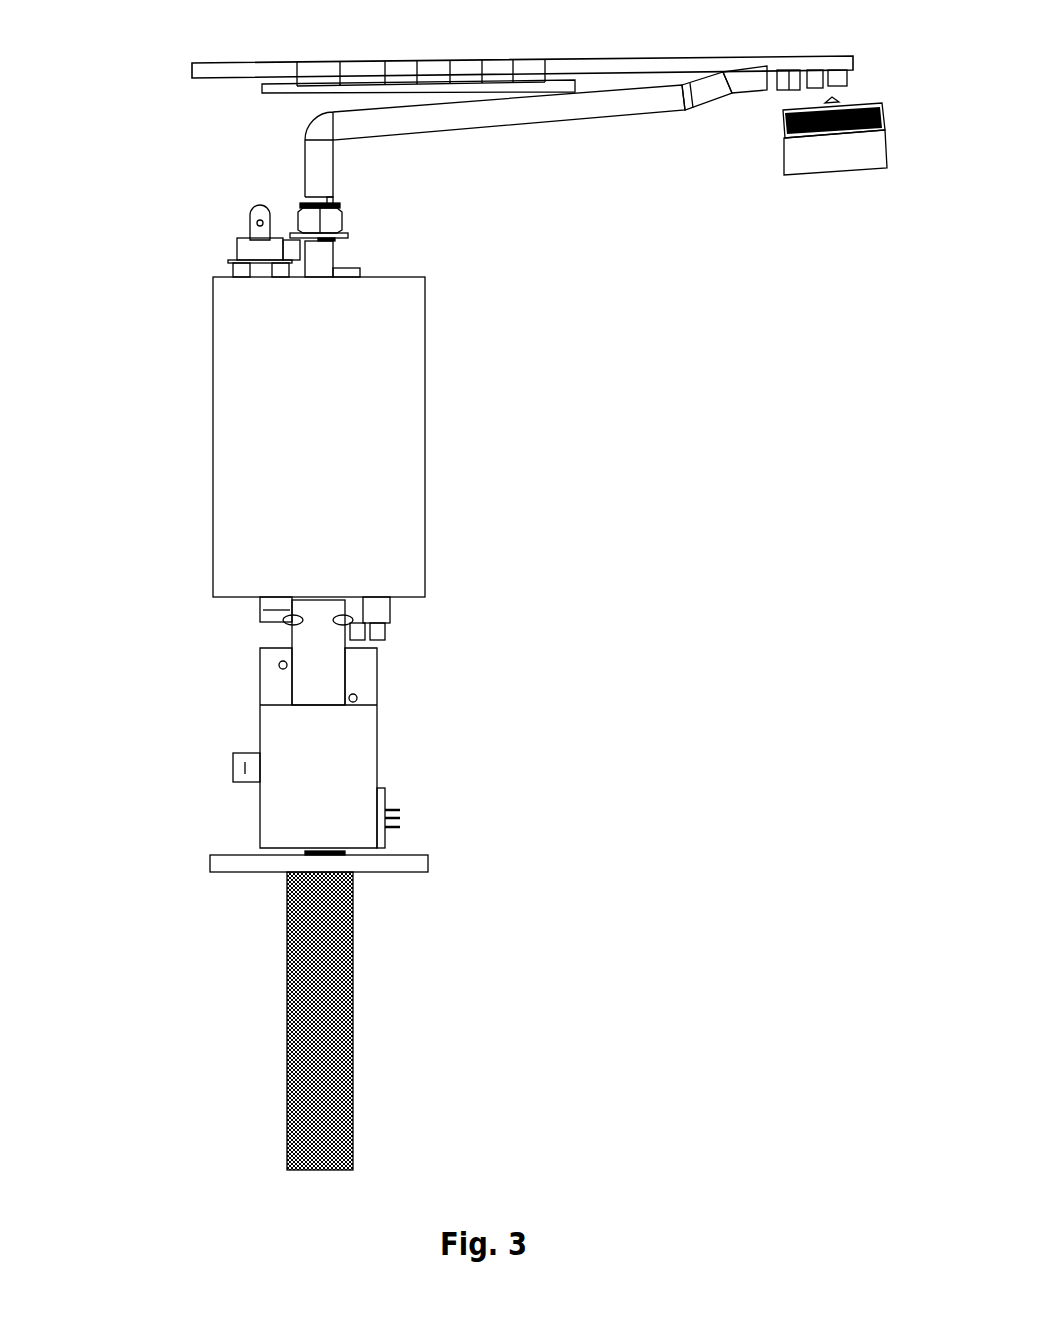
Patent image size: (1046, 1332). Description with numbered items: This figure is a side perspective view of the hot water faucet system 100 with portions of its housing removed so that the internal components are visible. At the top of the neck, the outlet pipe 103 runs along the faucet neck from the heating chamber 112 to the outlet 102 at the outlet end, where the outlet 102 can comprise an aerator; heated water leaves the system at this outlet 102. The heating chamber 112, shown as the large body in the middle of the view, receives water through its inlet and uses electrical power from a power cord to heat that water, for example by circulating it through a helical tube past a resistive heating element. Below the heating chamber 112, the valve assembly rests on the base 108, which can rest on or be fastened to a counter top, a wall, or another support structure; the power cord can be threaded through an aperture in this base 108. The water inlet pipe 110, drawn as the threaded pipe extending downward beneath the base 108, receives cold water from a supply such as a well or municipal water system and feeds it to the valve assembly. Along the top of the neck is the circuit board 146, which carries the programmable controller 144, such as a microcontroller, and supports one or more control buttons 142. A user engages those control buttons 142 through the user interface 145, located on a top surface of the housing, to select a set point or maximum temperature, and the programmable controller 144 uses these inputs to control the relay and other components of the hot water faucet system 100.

The hot water faucet system 100 is at (138, 38).
The outlet 102 is at (887, 137).
The outlet pipe 103 is at (565, 120).
The base 108 is at (428, 862).
The water inlet pipe 110 is at (353, 1043).
The heating chamber 112 is at (213, 442).
The control buttons 142 is at (533, 62).
The programmable controller 144 is at (315, 65).
The user interface 145 is at (548, 31).
The circuit board 146 is at (262, 87).